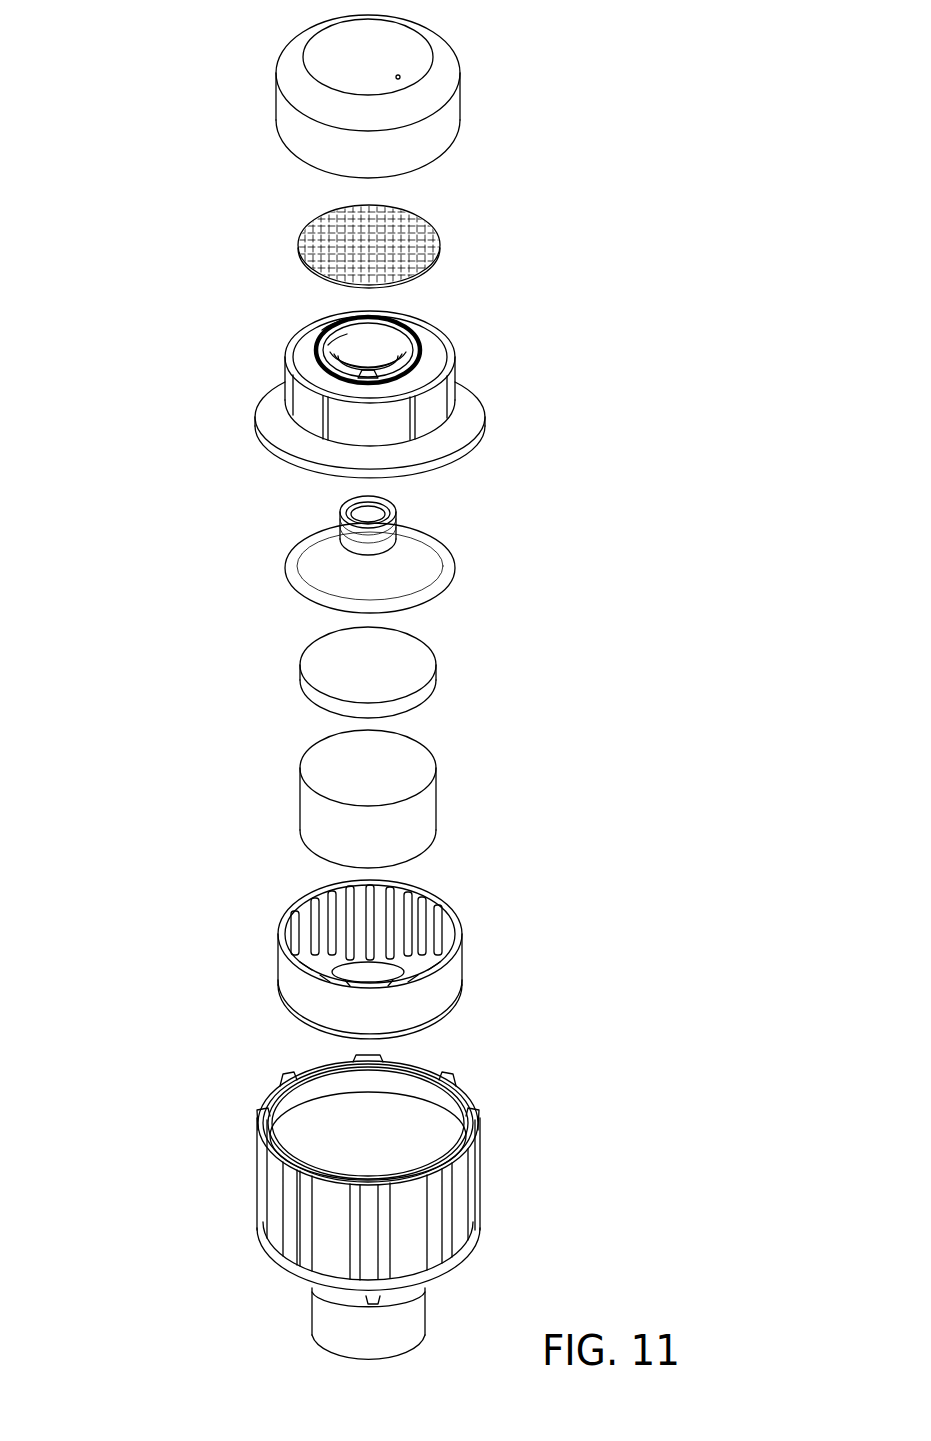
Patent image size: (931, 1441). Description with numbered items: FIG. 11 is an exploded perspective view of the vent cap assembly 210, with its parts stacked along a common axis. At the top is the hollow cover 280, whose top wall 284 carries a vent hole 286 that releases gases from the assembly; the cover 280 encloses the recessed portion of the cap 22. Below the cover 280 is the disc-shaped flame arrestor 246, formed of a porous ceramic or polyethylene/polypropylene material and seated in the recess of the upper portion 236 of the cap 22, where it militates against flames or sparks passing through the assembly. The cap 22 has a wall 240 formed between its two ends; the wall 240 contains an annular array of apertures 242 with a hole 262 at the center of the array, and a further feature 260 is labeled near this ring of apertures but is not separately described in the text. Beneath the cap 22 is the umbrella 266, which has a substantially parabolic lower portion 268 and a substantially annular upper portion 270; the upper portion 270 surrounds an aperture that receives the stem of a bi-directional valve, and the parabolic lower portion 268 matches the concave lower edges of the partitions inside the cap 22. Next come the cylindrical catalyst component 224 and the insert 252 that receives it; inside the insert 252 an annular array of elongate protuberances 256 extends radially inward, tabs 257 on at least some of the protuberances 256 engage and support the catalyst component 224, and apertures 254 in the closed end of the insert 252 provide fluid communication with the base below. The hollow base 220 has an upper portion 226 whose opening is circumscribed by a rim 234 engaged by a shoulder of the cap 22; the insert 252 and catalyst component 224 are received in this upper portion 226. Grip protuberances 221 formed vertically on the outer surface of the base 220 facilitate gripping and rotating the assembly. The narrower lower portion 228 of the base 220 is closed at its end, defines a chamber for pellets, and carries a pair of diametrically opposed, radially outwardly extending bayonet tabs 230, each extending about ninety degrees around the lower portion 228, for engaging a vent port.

The vent cap assembly 210 is at (93, 36).
The hollow cover 280 is at (460, 117).
The top wall 284 is at (402, 42).
The vent hole 286 is at (400, 77).
The flame arrestor 246 is at (440, 252).
The cap 22 is at (483, 410).
The upper portion 236 is at (290, 393).
The apertures 242 is at (368, 368).
The wall 240 is at (418, 340).
The ring top edge 260 is at (345, 322).
The hole 262 is at (347, 342).
The umbrella 266 is at (455, 566).
The lower portion 268 is at (288, 562).
The upper portion 270 is at (397, 518).
The catalyst component 224 is at (437, 673).
The insert 252 is at (460, 962).
The tab 257 is at (327, 957).
The elongate protuberances 256 is at (373, 918).
The apertures 254 is at (390, 952).
The hollow base 220 is at (480, 1160).
The rim 234 is at (277, 1126).
The upper portion 226 is at (257, 1183).
The grip protuberances 221 is at (443, 1232).
The lower portion 228 is at (318, 1313).
The bayonet tabs 230 is at (425, 1303).